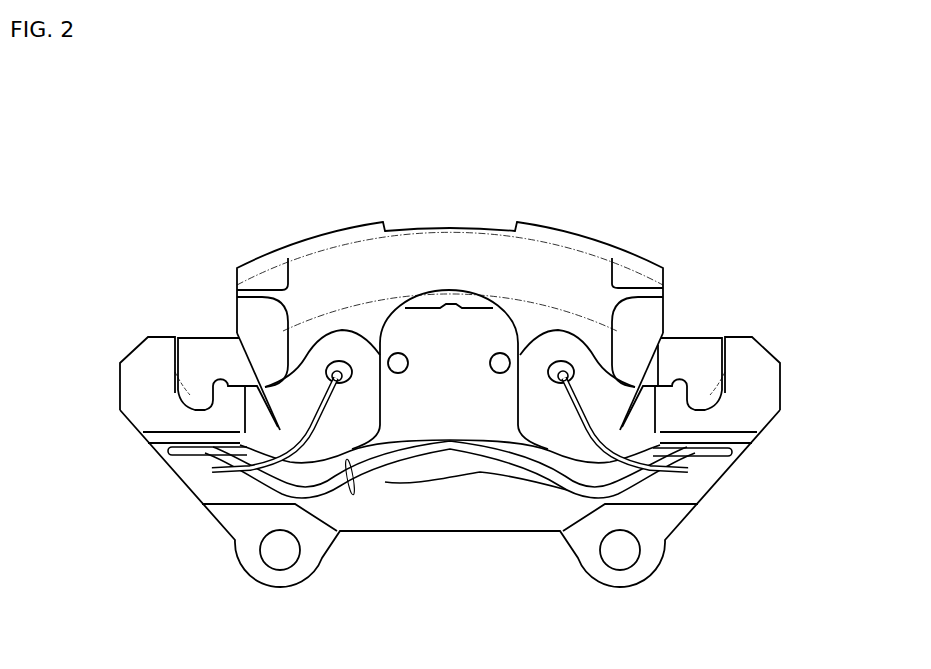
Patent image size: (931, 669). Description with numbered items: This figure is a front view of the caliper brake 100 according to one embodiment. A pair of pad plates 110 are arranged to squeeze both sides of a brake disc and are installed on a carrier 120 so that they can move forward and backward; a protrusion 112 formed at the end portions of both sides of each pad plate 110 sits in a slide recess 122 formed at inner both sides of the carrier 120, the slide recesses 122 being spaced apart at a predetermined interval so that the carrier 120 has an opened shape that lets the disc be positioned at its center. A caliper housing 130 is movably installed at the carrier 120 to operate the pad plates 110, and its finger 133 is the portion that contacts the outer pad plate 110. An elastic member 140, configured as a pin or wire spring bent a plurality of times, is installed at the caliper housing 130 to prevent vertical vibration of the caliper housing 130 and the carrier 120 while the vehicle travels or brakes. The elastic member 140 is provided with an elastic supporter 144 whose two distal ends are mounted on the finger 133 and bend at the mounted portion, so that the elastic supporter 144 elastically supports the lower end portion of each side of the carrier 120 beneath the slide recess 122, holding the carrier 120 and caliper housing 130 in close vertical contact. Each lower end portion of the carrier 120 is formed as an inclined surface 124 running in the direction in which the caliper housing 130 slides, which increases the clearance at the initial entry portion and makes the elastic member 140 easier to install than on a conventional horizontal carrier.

The caliper brake 100 is at (744, 168).
The pad plate 110 is at (477, 418).
The protrusion 112 is at (700, 348).
The carrier 120 is at (663, 520).
The slide recess 122 is at (187, 393).
The inclined surface 124 is at (153, 440).
The caliper housing 130 is at (577, 215).
The finger 133 is at (309, 372).
The elastic member 140 is at (333, 432).
The elastic supporter 144 is at (180, 447).